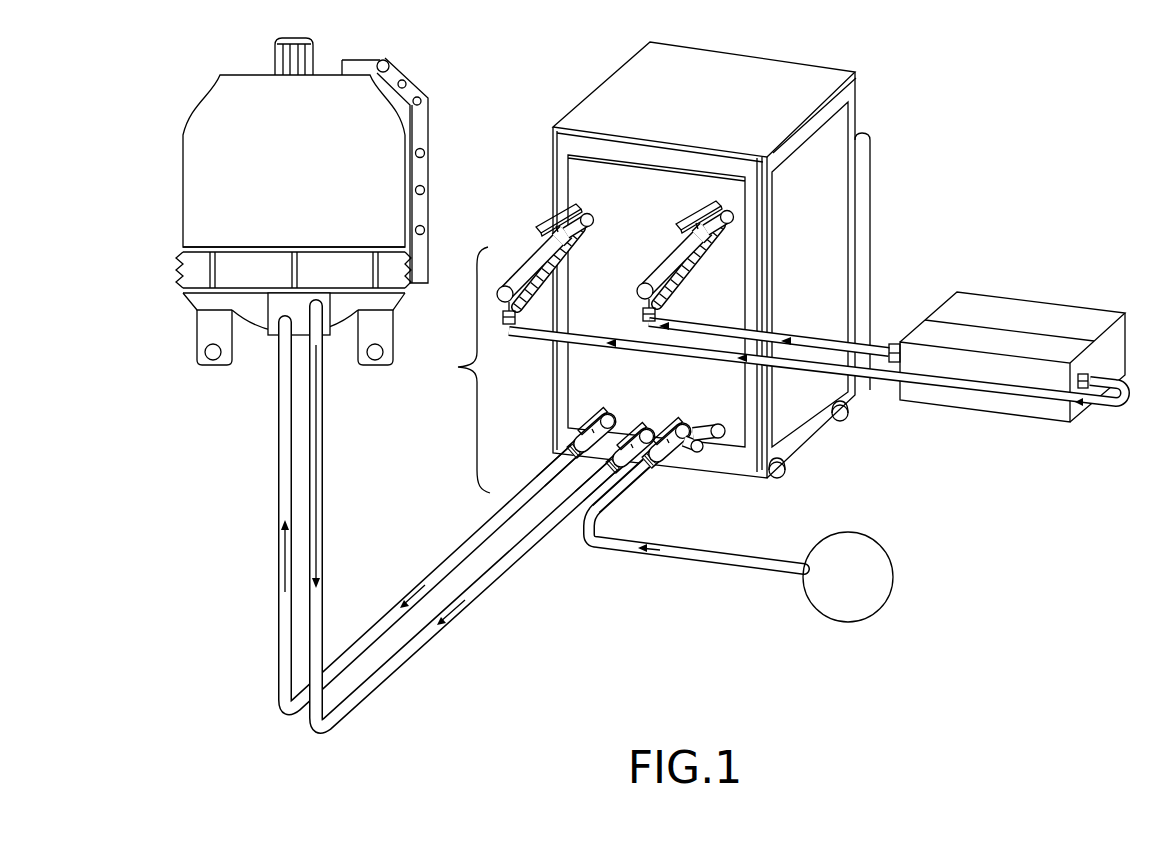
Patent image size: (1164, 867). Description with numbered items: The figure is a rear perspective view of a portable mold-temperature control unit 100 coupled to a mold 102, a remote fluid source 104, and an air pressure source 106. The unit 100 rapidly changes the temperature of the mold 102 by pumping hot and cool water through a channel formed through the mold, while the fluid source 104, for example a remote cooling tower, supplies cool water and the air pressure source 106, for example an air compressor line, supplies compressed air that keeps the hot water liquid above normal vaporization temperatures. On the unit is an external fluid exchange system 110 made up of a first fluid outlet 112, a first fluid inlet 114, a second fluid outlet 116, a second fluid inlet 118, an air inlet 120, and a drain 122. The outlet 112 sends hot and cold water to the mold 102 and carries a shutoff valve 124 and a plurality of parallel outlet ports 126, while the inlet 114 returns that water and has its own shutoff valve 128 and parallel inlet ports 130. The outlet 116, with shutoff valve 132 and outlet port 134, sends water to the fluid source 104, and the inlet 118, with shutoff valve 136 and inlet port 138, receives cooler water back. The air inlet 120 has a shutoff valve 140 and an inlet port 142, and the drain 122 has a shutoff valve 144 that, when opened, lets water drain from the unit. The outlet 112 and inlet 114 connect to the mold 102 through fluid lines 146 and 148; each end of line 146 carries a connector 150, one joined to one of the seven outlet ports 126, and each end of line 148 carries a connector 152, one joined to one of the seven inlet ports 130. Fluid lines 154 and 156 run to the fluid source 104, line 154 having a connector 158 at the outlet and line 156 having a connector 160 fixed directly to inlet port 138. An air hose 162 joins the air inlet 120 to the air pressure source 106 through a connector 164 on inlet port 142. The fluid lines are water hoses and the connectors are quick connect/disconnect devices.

The mold-temperature control unit 100 is at (709, 111).
The mold 102 is at (985, 349).
The remote fluid source 104 is at (273, 179).
The air pressure source 106 is at (833, 586).
The external fluid exchange system 110 is at (457, 370).
The first fluid outlet 112 is at (540, 254).
The first fluid inlet 114 is at (669, 246).
The second fluid outlet 116 is at (555, 408).
The second fluid inlet 118 is at (639, 428).
The air inlet 120 is at (685, 462).
The drain 122 is at (698, 434).
The shutoff valve 124 is at (548, 223).
The parallel outlet ports 126 is at (572, 268).
The shutoff valve 128 is at (689, 205).
The parallel inlet ports 130 is at (695, 270).
The shutoff valve 132 is at (557, 428).
The outlet port 134 is at (563, 453).
The shutoff valve 136 is at (640, 425).
The inlet port 138 is at (627, 468).
The shutoff valve 140 is at (676, 430).
The inlet port 142 is at (656, 458).
The shutoff valve 144 is at (700, 425).
The fluid line 146 is at (788, 368).
The fluid line 148 is at (776, 334).
The connector 150 is at (508, 327).
The connector 152 is at (645, 312).
The fluid line 154 is at (372, 630).
The fluid line 156 is at (507, 568).
The connector 158 is at (567, 457).
The connector 160 is at (630, 474).
The air hose 162 is at (615, 550).
The connector 164 is at (658, 470).